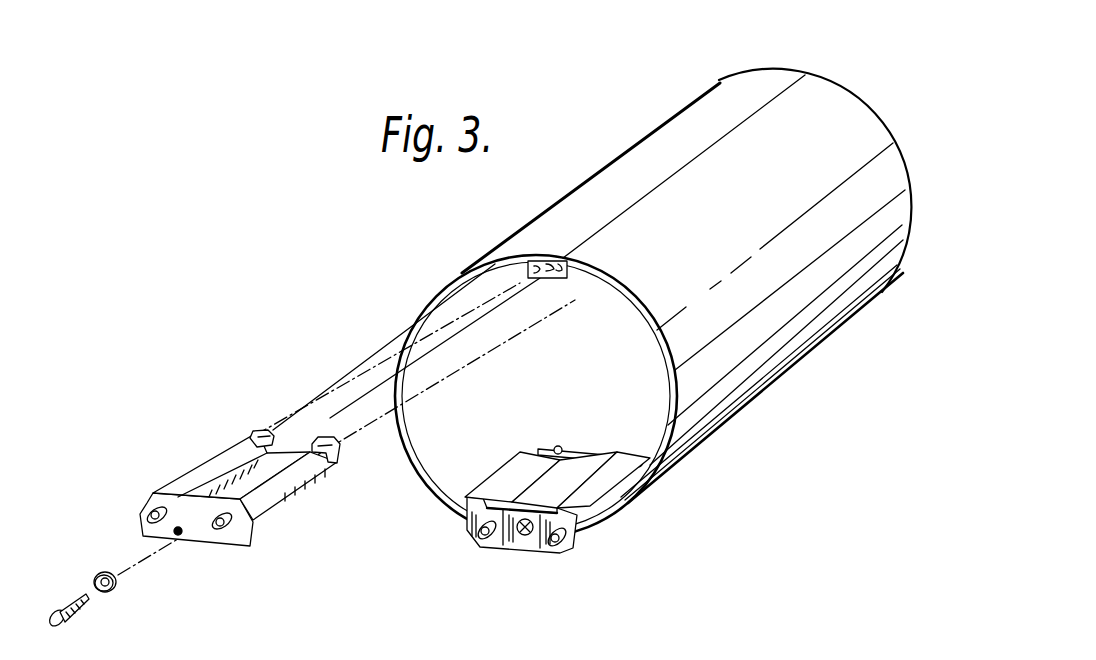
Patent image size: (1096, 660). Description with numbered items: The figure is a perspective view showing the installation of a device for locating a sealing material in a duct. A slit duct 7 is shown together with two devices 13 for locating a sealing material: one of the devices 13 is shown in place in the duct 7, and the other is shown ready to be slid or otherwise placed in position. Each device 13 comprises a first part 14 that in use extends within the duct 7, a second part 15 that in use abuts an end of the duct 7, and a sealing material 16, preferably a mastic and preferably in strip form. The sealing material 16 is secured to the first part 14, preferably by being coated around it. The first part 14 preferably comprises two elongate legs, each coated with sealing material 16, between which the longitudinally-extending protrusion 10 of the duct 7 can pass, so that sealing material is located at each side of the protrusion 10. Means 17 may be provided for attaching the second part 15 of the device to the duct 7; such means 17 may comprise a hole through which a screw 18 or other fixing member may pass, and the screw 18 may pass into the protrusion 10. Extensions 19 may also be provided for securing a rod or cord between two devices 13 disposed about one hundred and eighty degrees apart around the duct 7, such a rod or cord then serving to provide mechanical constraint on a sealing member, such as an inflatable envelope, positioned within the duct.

The slit duct 7 is at (637, 147).
The longitudinally-extending protrusion 10 is at (545, 280).
The device for locating a sealing material 13 is at (348, 507).
The first part 14 is at (256, 432).
The second part 15 is at (157, 528).
The sealing material 16 is at (210, 476).
The means for attaching 17 is at (178, 536).
The screw 18 is at (74, 598).
The extensions 19 is at (227, 533).